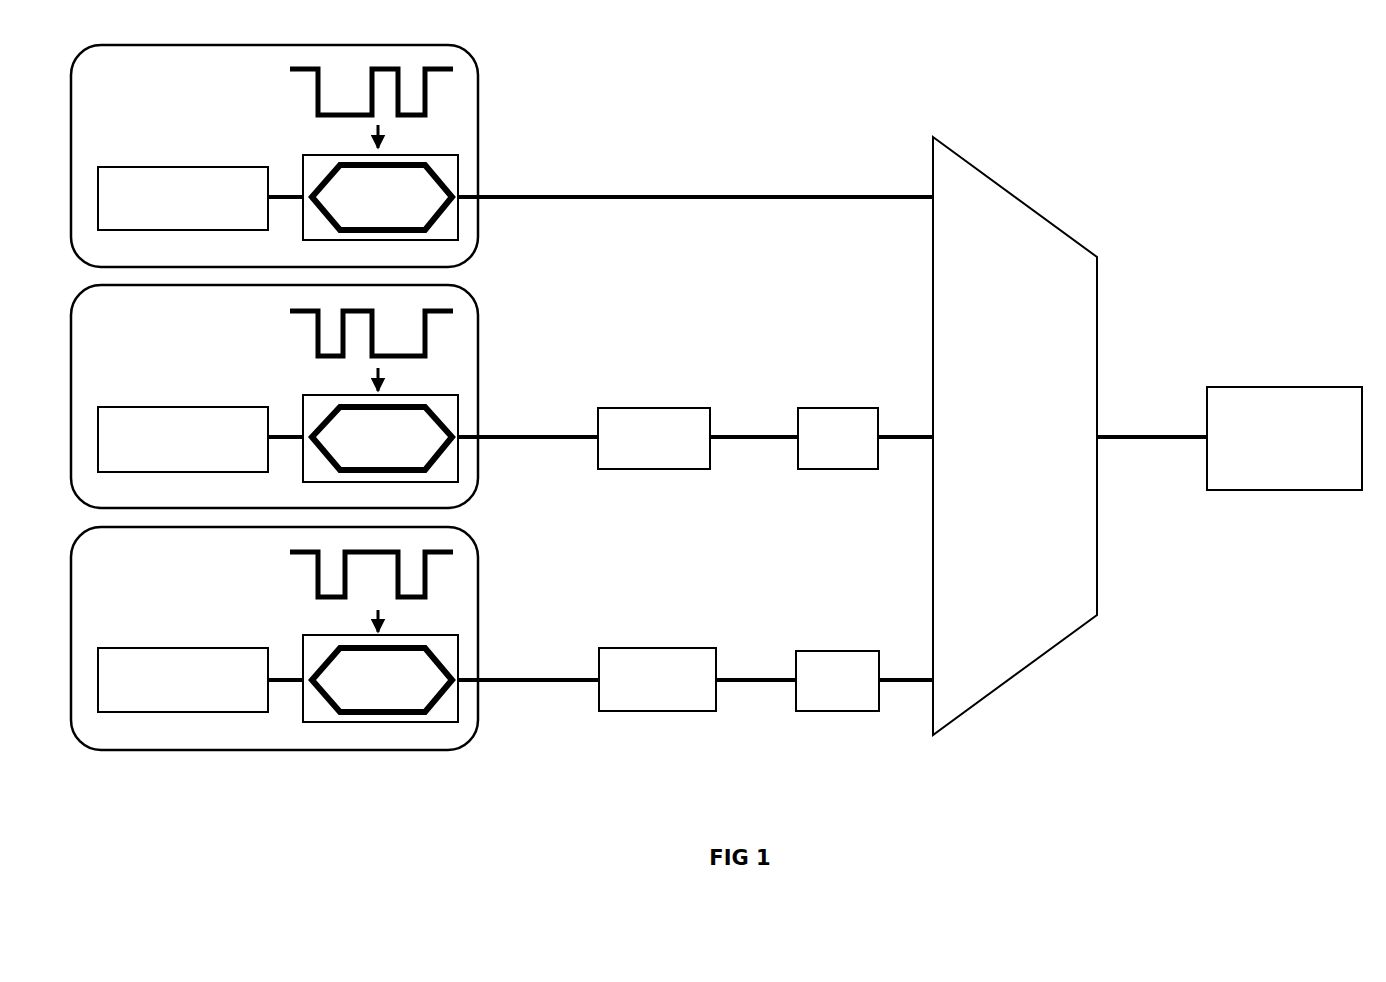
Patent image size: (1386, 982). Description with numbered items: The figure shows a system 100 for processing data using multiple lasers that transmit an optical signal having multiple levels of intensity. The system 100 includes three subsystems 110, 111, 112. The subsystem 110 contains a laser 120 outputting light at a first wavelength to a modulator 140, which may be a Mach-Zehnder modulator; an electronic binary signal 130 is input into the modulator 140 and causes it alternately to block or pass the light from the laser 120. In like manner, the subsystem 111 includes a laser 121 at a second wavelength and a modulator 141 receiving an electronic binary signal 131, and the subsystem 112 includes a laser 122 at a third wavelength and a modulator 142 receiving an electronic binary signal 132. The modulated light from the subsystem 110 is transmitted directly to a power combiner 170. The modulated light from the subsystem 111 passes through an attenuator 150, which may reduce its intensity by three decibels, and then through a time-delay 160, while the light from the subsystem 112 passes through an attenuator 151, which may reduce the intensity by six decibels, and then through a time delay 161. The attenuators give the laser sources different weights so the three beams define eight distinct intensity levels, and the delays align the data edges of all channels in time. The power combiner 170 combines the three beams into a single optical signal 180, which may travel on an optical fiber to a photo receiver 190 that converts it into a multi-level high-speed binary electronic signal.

The system 100 is at (897, 103).
The subsystem 110 is at (481, 64).
The subsystem 111 is at (482, 321).
The subsystem 112 is at (483, 597).
The laser 120 is at (190, 212).
The laser 121 is at (197, 451).
The laser 122 is at (189, 692).
The electronic binary signal 130 is at (258, 92).
The electronic binary signal 131 is at (252, 355).
The electronic binary signal 132 is at (252, 575).
The modulator 140 is at (401, 206).
The modulator 141 is at (401, 448).
The modulator 142 is at (401, 691).
The attenuator 150 is at (626, 407).
The attenuator 151 is at (670, 711).
The time-delay 160 is at (827, 407).
The time delay 161 is at (852, 712).
The power combiner 170 is at (1041, 448).
The optical signal 180 is at (1152, 436).
The photo receiver 190 is at (1236, 387).